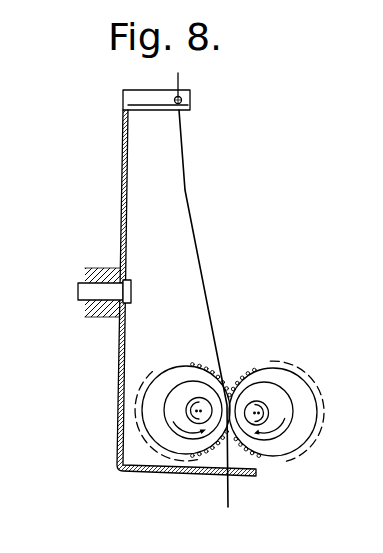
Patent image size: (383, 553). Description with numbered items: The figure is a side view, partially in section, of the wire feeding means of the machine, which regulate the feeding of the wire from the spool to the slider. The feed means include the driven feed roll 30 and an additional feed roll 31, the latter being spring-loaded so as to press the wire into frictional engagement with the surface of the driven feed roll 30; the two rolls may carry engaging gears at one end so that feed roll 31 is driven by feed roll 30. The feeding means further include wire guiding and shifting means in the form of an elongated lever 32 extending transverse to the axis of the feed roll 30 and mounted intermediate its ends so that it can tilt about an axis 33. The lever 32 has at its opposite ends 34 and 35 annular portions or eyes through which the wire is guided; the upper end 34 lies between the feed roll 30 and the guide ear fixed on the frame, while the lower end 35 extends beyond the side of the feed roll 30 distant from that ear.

The driven feed roll 30 is at (172, 377).
The additional feed roll 31 is at (285, 375).
The elongated lever 32 is at (128, 172).
The axis 33 is at (88, 291).
The upper end of lever 34 is at (182, 100).
The lower end of lever 35 is at (216, 474).